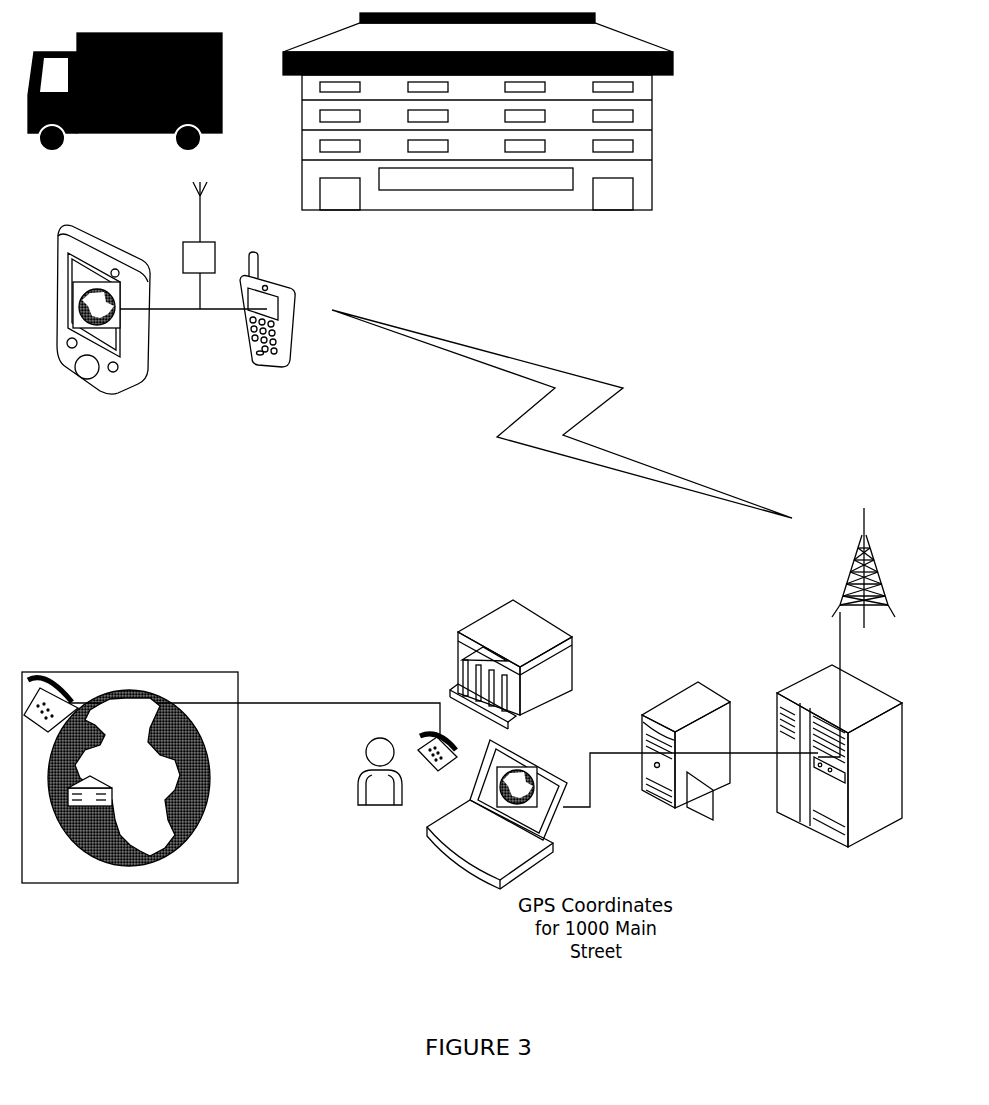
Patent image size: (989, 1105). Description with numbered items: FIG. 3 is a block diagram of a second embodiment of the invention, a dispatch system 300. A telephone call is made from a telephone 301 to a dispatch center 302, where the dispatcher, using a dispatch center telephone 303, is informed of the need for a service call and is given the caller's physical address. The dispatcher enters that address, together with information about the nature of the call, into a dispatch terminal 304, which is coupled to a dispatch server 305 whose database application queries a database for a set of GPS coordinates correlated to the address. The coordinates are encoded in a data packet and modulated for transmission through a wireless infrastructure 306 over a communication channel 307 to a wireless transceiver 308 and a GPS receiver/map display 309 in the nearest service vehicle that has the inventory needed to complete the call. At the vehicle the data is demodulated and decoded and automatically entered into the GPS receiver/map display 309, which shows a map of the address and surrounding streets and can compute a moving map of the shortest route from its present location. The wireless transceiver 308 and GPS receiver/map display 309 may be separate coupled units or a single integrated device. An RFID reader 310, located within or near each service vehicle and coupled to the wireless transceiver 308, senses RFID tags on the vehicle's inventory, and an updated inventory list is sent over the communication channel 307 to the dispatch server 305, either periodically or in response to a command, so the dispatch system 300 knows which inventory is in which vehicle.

The dispatch system 300 is at (433, 119).
The telephone 301 is at (130, 770).
The dispatch center 302 is at (507, 662).
The dispatch center telephone 303 is at (256, 754).
The dispatch terminal 304 is at (622, 821).
The dispatch server 305 is at (686, 769).
The wireless infrastructure 306 is at (839, 695).
The communication channel 307 is at (562, 414).
The wireless transceiver 308 is at (269, 325).
The GPS receiver/map display 309 is at (103, 336).
The RFID reader 310 is at (192, 245).